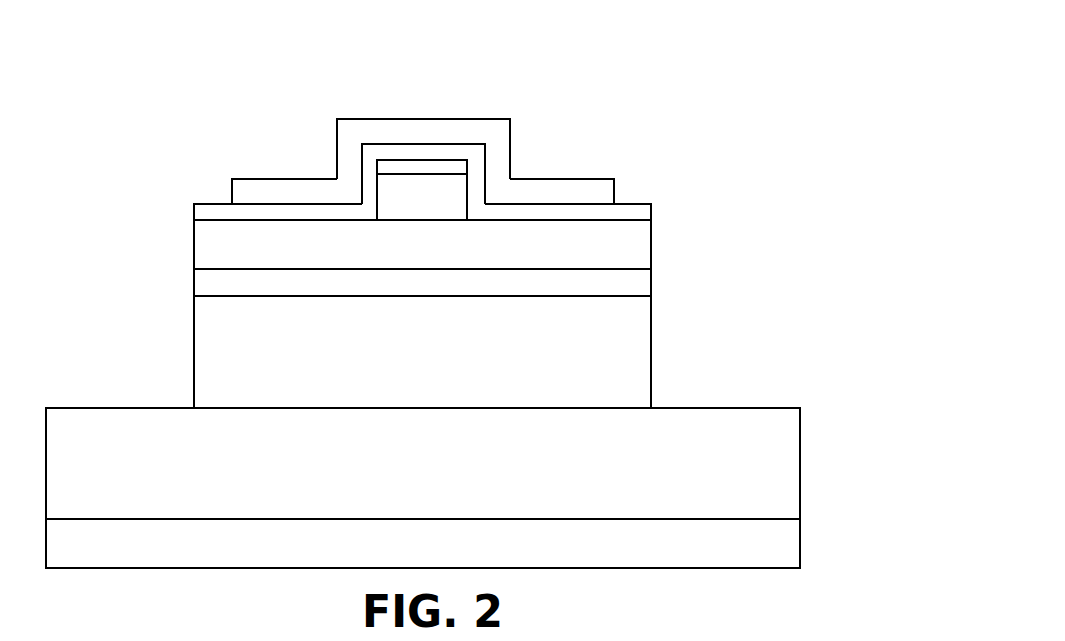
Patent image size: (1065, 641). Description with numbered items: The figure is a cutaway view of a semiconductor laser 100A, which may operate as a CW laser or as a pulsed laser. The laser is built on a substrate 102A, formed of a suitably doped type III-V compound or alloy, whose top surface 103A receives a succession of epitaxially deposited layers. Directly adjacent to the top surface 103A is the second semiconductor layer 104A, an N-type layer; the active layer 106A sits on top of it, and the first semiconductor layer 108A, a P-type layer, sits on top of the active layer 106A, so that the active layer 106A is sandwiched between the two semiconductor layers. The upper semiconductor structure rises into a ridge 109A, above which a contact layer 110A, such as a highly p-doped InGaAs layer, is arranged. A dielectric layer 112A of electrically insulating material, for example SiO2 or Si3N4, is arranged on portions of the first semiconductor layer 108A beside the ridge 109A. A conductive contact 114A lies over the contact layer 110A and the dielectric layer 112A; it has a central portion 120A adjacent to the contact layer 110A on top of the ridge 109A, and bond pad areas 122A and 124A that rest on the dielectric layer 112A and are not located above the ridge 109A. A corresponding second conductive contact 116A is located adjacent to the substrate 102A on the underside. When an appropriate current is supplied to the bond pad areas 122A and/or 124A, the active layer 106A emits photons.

The semiconductor laser 100A is at (644, 64).
The substrate 102A is at (772, 473).
The top surface 103A is at (90, 405).
The second semiconductor layer 104A is at (617, 371).
The active layer 106A is at (636, 287).
The first semiconductor layer 108A is at (630, 248).
The ridge 109A is at (392, 189).
The contact layer 110A is at (447, 166).
The dielectric layer 112A is at (638, 212).
The conductive contact 114A is at (603, 191).
The second conductive contact 116A is at (783, 549).
The central portion 120A is at (393, 128).
The bond pad area 122A is at (275, 190).
The bond pad area 124A is at (529, 188).